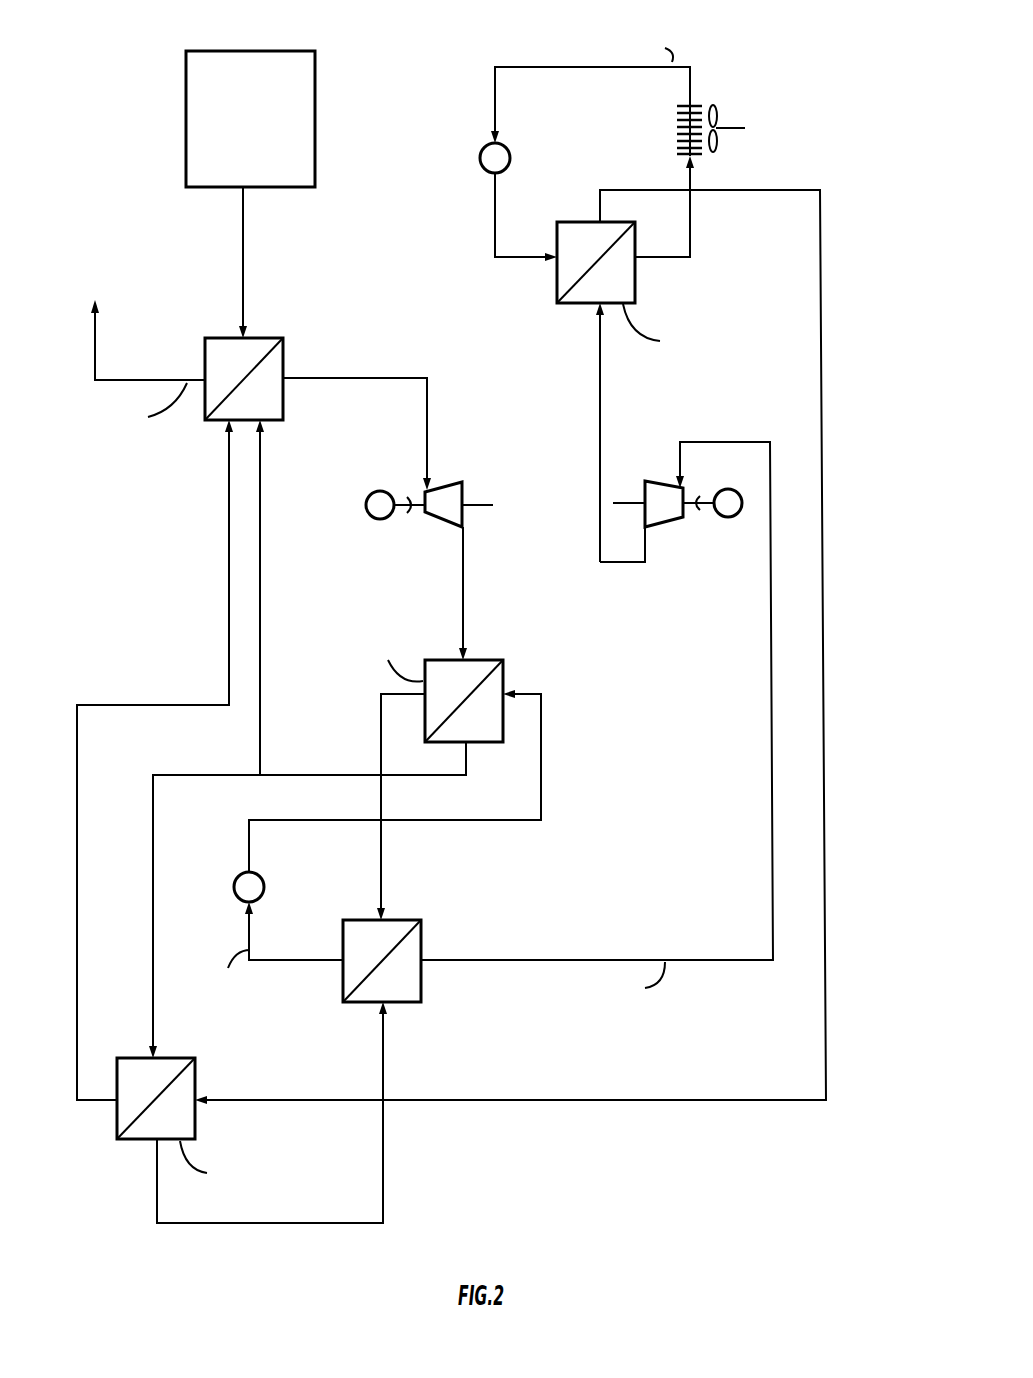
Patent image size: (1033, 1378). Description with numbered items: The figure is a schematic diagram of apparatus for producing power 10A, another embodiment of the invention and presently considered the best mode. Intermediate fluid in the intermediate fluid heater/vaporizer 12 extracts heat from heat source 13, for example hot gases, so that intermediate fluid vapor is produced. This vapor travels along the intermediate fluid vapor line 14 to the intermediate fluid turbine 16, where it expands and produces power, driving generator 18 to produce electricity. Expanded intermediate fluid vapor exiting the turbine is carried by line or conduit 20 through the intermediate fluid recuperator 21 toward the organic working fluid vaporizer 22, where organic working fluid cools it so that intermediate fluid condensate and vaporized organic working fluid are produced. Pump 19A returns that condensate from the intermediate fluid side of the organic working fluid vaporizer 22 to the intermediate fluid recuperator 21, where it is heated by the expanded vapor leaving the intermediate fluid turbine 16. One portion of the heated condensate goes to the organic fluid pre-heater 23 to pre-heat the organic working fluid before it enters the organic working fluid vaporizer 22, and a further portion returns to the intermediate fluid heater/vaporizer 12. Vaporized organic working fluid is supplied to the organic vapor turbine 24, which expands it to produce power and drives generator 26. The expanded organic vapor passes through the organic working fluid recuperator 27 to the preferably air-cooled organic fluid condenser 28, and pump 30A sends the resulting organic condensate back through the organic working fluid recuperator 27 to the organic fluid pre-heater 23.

The apparatus for producing power 10A is at (152, 42).
The intermediate fluid heater/vaporizer 12 is at (223, 337).
The heat source 13 is at (270, 187).
The intermediate fluid vapor conduit 14 is at (426, 446).
The intermediate fluid turbine 16 is at (446, 489).
The generator 18 is at (370, 516).
The pump 19A is at (264, 890).
The line or conduit 20 is at (461, 592).
The intermediate fluid recuperator 21 is at (504, 680).
The organic working fluid vaporizer 22 is at (422, 936).
The organic fluid pre-heater 23 is at (197, 1080).
The organic vapor turbine 24 is at (660, 481).
The generator 26 is at (728, 518).
The organic working fluid recuperator 27 is at (580, 221).
The organic fluid condenser 28 is at (688, 104).
The pump 30A is at (484, 150).